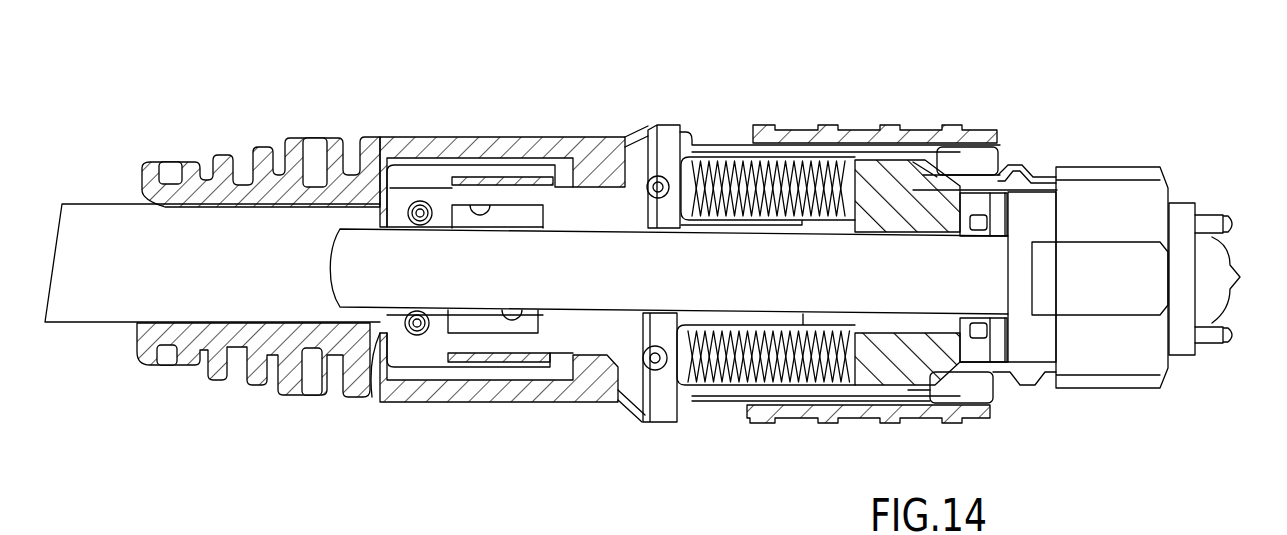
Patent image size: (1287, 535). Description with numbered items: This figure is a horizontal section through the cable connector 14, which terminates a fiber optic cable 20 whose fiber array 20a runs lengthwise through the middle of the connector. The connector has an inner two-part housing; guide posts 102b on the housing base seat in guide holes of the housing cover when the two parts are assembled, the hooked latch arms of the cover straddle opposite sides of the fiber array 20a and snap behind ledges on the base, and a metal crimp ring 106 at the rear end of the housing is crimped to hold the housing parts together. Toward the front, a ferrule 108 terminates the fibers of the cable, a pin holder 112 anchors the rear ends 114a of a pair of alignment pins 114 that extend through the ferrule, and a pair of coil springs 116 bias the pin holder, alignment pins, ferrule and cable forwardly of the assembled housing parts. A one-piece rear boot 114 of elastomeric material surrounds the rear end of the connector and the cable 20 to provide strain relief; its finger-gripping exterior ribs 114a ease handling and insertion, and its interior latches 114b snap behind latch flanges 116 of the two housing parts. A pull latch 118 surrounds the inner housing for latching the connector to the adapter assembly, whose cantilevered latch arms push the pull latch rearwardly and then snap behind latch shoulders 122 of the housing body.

The cable connector 14 is at (873, 60).
The fiber optic cable 20 is at (98, 222).
The fiber array 20a is at (372, 293).
The guide posts 102b is at (670, 183).
The crimp ring 106 is at (517, 177).
The ferrule 108 is at (1032, 212).
The pin holder 112 is at (473, 205).
The rear boot 114 is at (383, 145).
The finger-gripping exterior ribs 114a is at (333, 140).
The interior latches 114b is at (607, 177).
The coil springs 116 is at (783, 177).
The pull latch 118 is at (890, 177).
The latch shoulders 122 is at (995, 150).